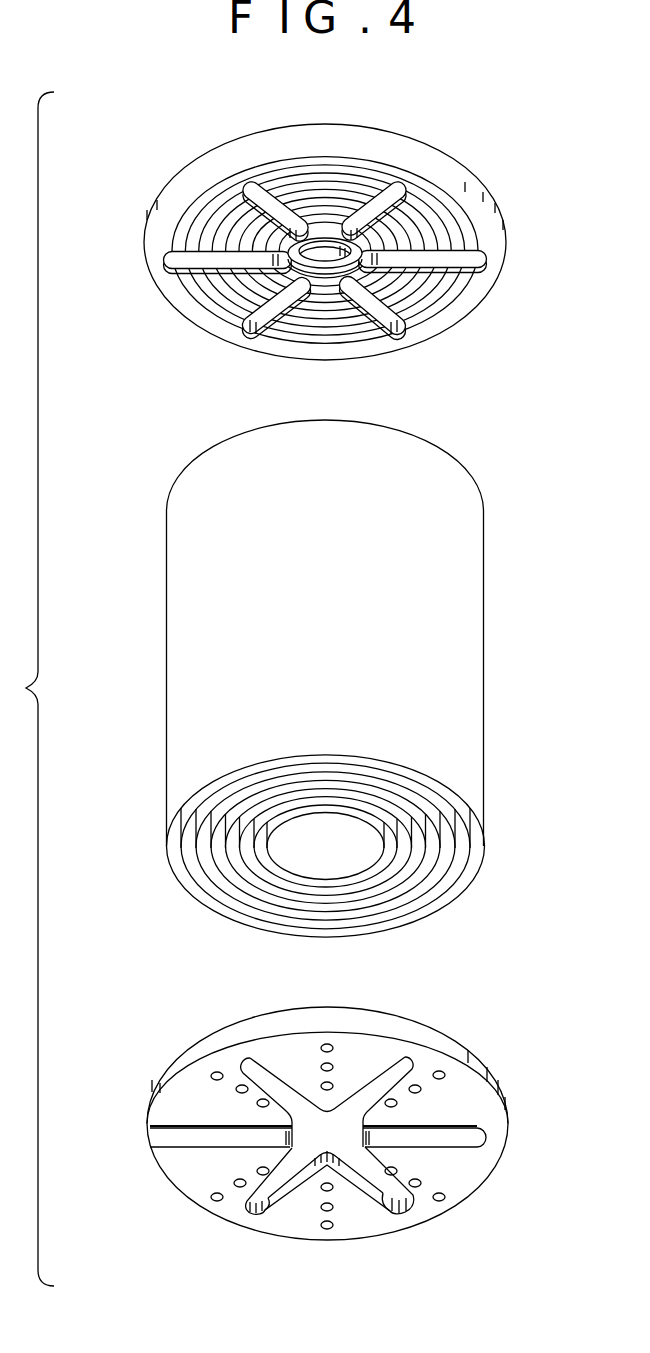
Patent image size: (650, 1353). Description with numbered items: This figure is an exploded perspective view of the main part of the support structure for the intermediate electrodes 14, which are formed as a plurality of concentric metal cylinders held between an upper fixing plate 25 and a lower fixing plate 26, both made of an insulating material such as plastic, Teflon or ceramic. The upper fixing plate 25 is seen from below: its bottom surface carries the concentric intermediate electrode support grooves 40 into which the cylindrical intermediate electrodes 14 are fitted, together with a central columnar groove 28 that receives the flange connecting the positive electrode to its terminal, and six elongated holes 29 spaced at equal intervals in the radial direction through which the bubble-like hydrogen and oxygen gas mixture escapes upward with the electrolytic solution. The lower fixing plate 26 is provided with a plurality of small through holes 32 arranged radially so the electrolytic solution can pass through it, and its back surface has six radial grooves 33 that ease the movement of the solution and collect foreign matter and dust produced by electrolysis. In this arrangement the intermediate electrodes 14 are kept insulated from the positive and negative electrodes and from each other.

The intermediate electrodes 14 is at (178, 672).
The upper fixing plate 25 is at (342, 240).
The lower fixing plate 26 is at (333, 1139).
The columnar groove 28 is at (295, 262).
The elongated holes 29 is at (462, 267).
The small through holes 32 is at (438, 1200).
The grooves 33 is at (475, 1147).
The intermediate electrode support grooves 40 is at (475, 225).